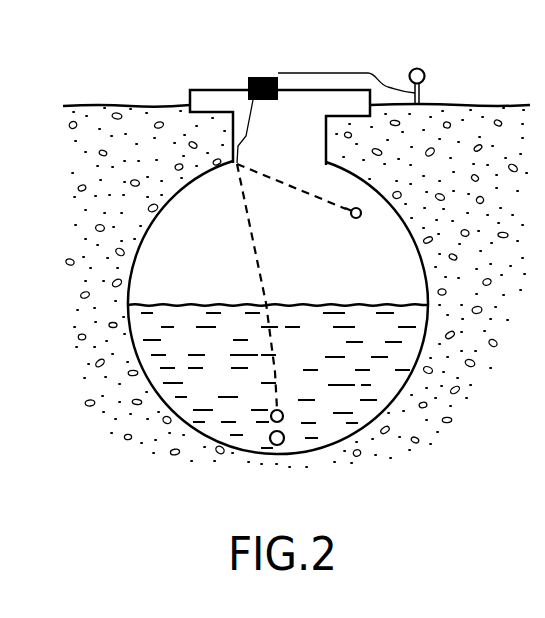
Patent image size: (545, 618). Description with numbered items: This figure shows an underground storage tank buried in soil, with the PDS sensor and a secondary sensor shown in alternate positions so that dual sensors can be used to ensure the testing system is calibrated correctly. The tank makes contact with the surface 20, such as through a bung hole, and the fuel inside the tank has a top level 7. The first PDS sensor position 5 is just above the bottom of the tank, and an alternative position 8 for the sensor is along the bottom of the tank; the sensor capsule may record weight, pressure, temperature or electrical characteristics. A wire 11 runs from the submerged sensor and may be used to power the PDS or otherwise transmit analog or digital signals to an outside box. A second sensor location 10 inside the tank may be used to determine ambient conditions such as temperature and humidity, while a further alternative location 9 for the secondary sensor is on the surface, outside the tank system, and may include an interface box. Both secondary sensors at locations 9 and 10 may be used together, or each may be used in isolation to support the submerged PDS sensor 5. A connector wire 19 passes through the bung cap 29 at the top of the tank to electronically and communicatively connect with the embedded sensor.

The surface 20 is at (271, 108).
The bung cap 29 is at (257, 103).
The connector wire 19 is at (346, 69).
The further alternative location for secondary sensor 9 is at (433, 74).
The wire 11 is at (245, 286).
The second sensor location 10 is at (314, 211).
The top level 7 is at (277, 290).
The sensor (PDS) 5 is at (289, 402).
The alternative position for sensor 8 is at (304, 436).